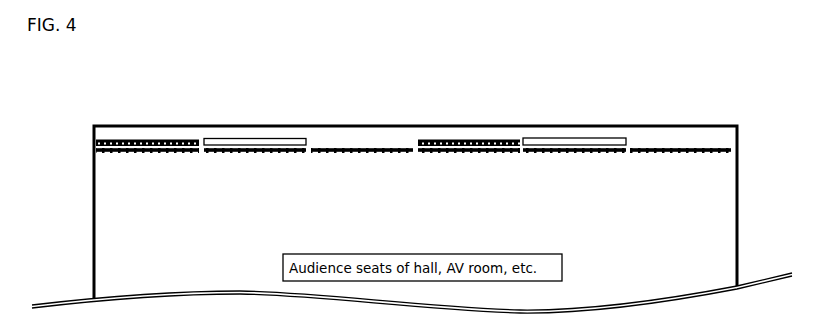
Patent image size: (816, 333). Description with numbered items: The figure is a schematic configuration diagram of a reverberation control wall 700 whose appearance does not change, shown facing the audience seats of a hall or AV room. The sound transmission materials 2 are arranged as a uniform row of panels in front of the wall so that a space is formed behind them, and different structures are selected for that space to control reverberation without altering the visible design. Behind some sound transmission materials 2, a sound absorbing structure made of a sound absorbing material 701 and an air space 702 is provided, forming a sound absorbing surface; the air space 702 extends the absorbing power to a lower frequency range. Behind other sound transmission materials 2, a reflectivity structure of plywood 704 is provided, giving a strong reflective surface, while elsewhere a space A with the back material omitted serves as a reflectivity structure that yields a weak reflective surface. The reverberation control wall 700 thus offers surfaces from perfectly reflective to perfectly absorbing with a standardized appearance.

The reverberation control wall 700 is at (93, 129).
The sound absorbing material 701 is at (116, 139).
The air space 702 is at (140, 134).
The plywood 704 is at (234, 140).
The space A is at (347, 140).
The sound transmission material 2 is at (145, 155).